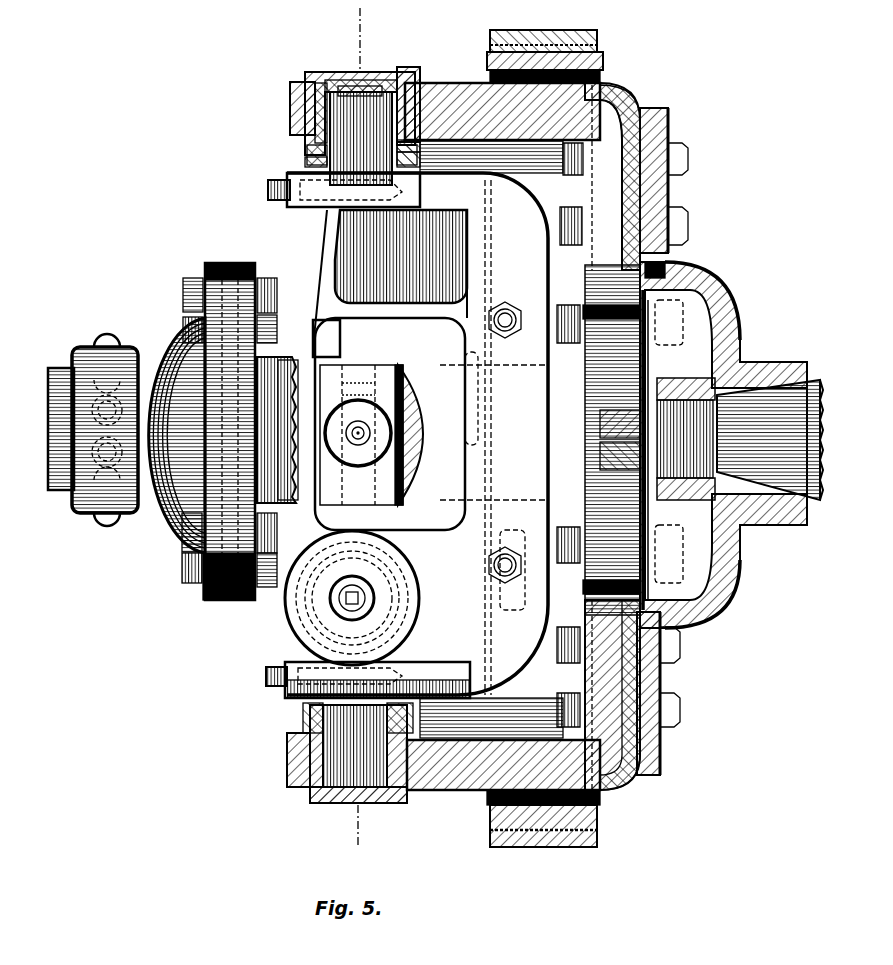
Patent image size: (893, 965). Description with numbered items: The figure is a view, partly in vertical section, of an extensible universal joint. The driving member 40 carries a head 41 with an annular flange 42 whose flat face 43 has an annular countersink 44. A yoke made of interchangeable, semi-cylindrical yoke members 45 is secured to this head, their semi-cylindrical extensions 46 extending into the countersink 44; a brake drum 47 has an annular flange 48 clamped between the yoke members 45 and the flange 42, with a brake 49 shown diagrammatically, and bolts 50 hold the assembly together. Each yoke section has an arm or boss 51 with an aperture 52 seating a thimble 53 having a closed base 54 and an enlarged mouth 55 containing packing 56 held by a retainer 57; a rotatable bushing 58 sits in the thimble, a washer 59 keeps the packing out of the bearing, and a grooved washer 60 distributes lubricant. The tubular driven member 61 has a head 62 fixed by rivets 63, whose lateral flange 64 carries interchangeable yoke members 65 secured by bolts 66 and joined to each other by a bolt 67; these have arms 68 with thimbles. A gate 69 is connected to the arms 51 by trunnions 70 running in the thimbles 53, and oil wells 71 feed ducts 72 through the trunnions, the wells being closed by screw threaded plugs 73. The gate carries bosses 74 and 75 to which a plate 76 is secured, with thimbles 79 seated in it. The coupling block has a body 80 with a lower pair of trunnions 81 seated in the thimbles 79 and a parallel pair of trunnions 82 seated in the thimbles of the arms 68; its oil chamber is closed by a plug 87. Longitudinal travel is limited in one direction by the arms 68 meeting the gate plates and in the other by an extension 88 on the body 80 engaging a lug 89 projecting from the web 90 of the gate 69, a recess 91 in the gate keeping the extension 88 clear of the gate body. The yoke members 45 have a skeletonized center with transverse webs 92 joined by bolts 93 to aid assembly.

The driving member 40 is at (762, 393).
The head 41 is at (740, 320).
The annular flange 42 is at (668, 146).
The flat face 43 is at (668, 208).
The annular countersink 44 is at (665, 275).
The yoke members 45 is at (630, 95).
The semi-cylindrical extensions 46 is at (690, 295).
The brake drum 47 is at (600, 62).
The annular flange 48 is at (660, 125).
The brake 49 is at (597, 40).
The bolts 50 is at (690, 165).
The arm or boss 51 is at (455, 105).
The aperture 52 is at (420, 100).
The thimble 53 is at (312, 78).
The closed base 54 is at (378, 76).
The enlarged mouth 55 is at (307, 152).
The packing 56 is at (420, 147).
The retainer 57 is at (420, 163).
The rotatable bushing 58 is at (300, 105).
The washer 59 is at (318, 130).
The washer 60 is at (350, 80).
The driven member 61 is at (66, 492).
The head 62 is at (160, 528).
The rivets 63 is at (112, 525).
The laterally extending flange 64 is at (215, 600).
The yoke members 65 is at (248, 590).
The bolts 66 is at (195, 570).
The bolt 67 is at (282, 378).
The extensions or arms 68 is at (402, 458).
The gate 69 is at (490, 237).
The trunnions 70 is at (305, 160).
The oil wells 71 is at (330, 192).
The ducts or conduits 72 is at (368, 163).
The screw threaded plugs 73 is at (268, 190).
The boss 74 is at (515, 365).
The boss 75 is at (515, 608).
The plate 76 is at (480, 445).
The thimbles 79 is at (385, 592).
The body 80 is at (322, 517).
The trunnions 81 is at (330, 612).
The trunnions 82 is at (358, 452).
The plug 87 is at (360, 385).
The extension 88 is at (403, 362).
The lug 89 is at (328, 340).
The web 90 is at (345, 266).
The recess 91 is at (467, 385).
The transverse webs 92 is at (648, 425).
The bolts 93 is at (608, 415).